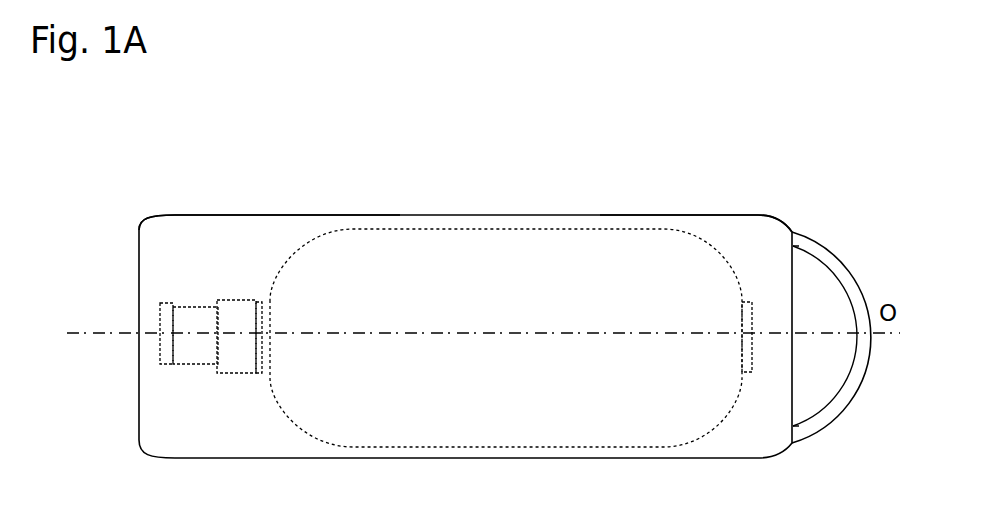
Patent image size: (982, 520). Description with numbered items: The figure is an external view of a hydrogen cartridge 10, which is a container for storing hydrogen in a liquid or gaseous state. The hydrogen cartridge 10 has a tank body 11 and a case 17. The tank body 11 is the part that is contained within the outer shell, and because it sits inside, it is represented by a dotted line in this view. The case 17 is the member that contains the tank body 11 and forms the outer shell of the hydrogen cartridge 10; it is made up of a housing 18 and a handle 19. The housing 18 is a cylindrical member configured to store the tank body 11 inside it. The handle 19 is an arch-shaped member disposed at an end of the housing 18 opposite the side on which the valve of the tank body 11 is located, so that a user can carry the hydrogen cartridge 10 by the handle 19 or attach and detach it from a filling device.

The hydrogen cartridge 10 is at (795, 180).
The tank body 11 is at (285, 240).
The case 17 is at (200, 208).
The housing 18 is at (717, 227).
The handle 19 is at (823, 248).